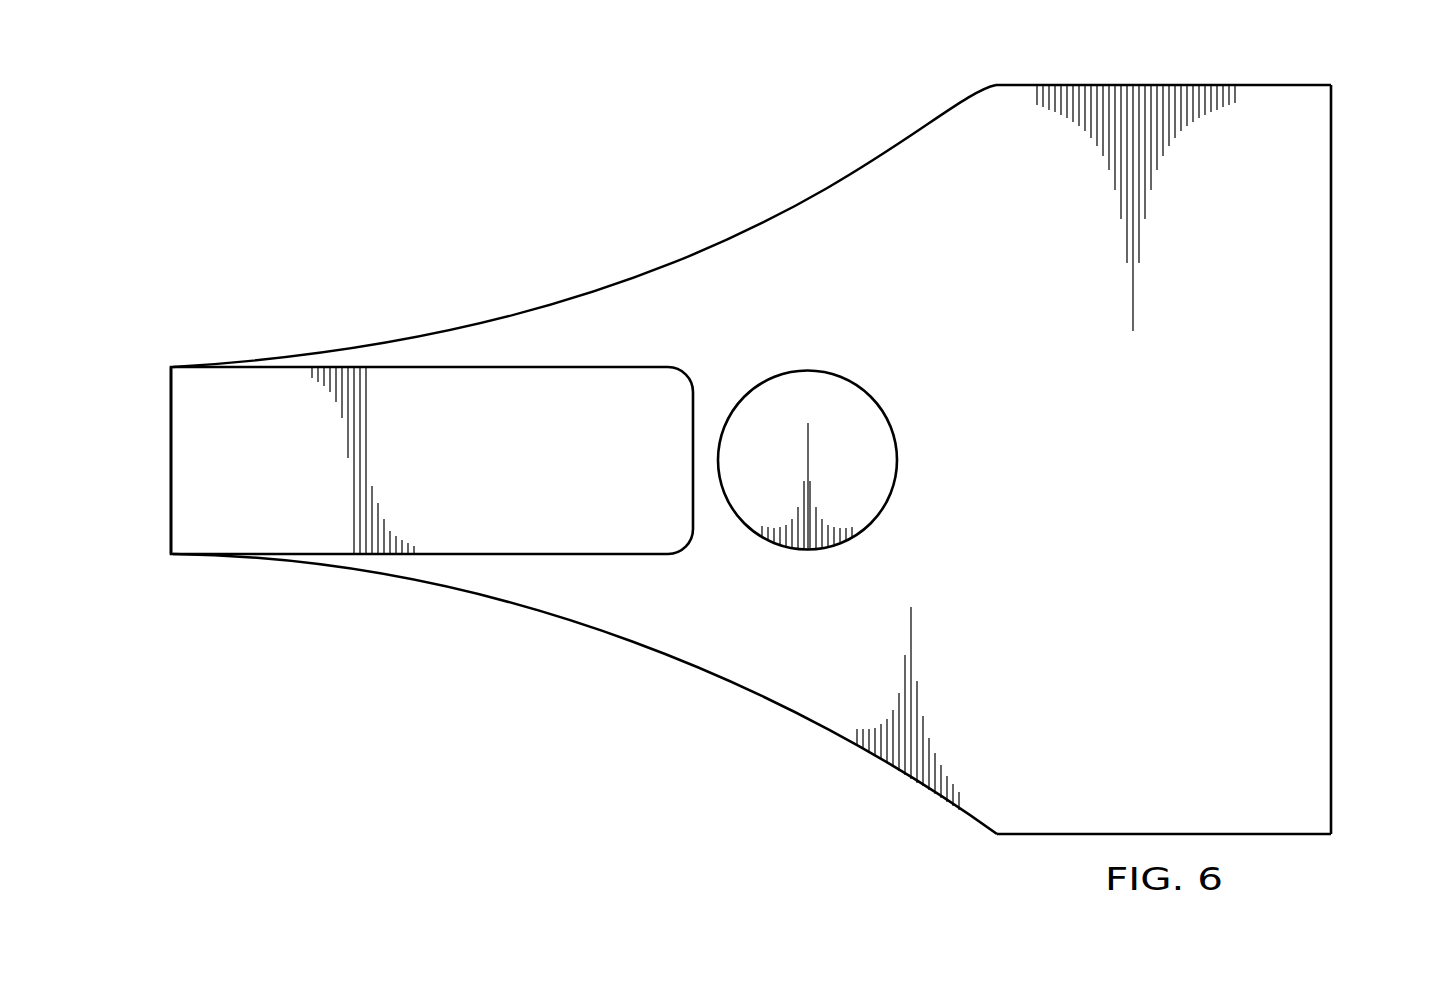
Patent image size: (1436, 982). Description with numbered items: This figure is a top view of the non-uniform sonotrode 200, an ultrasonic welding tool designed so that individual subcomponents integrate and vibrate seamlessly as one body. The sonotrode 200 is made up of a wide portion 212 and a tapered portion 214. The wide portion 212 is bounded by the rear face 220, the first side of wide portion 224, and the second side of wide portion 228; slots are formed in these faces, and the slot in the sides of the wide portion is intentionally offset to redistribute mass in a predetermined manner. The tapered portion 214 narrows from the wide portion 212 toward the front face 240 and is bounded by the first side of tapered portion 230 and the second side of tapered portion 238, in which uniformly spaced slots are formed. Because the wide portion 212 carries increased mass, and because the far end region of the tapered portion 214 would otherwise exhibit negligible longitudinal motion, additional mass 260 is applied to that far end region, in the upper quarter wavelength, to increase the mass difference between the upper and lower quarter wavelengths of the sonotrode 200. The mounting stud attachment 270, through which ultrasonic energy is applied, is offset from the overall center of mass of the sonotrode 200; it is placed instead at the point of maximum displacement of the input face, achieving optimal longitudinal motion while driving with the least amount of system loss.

The non-uniform sonotrode 200 is at (520, 123).
The wide portion 212 is at (1185, 475).
The tapered portion 214 is at (603, 345).
The rear face 220 is at (1331, 460).
The first side of wide portion 224 is at (1262, 85).
The second side of wide portion 228 is at (1298, 834).
The first side of tapered portion 230 is at (653, 270).
The second side of tapered portion 238 is at (650, 648).
The front face 240 is at (171, 458).
The additional mass 260 is at (419, 356).
The mounting stud attachment 270 is at (851, 366).